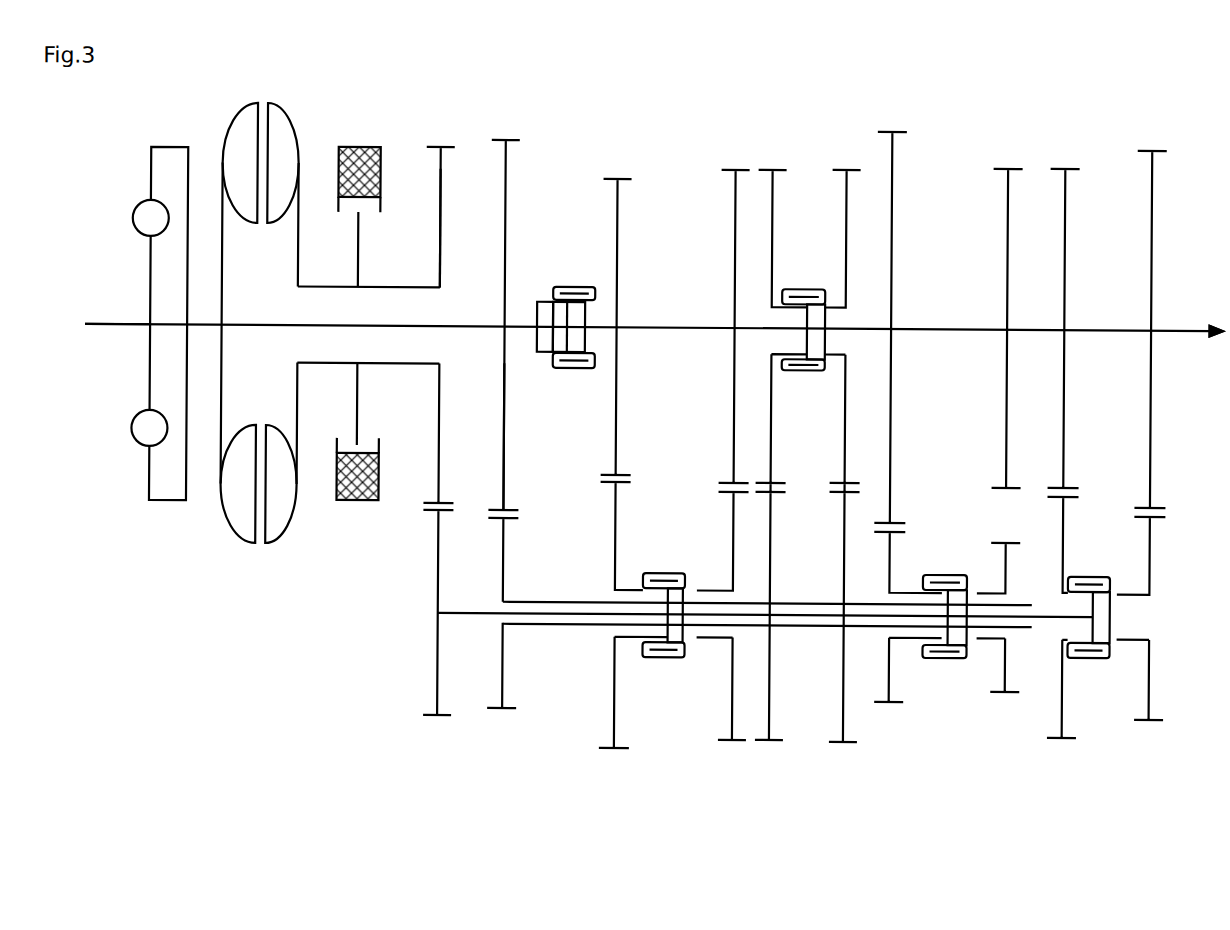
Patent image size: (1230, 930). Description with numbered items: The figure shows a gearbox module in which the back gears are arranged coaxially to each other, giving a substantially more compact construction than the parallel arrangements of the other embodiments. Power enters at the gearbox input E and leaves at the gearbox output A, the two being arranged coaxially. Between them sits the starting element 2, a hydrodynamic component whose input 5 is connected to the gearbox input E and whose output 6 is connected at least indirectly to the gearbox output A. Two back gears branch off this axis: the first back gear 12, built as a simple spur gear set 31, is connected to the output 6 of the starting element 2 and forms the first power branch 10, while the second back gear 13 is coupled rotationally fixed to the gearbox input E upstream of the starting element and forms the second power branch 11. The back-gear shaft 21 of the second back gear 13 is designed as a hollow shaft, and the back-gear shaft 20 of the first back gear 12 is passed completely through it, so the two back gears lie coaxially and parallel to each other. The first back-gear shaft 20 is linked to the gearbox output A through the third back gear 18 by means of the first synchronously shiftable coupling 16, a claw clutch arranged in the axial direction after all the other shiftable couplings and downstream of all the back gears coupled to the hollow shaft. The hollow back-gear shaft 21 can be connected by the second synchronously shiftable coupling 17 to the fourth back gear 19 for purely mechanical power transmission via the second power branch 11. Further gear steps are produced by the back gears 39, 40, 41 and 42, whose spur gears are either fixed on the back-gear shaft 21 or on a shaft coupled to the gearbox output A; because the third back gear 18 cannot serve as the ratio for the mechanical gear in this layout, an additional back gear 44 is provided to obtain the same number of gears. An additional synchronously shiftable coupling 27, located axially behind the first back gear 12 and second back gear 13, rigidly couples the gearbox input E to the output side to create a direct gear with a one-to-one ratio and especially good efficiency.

The starting element 2 is at (288, 102).
The input of the starting element 5 is at (204, 323).
The output of the starting element 6 is at (461, 326).
The first power branch 10 is at (460, 419).
The second power branch 11 is at (518, 449).
The first back gear 12 is at (445, 134).
The second back gear 13 is at (505, 126).
The first synchronously shiftable coupling 16 is at (1095, 673).
The second synchronously shiftable coupling 17 is at (673, 665).
The third back gear 18 is at (1062, 733).
The fourth back gear 19 is at (615, 758).
The back-gear shaft 20 is at (463, 621).
The back-gear shaft 21 is at (545, 625).
The additional synchronously shiftable coupling 27 is at (577, 388).
The spur gear set 31 is at (450, 199).
The back gear 39 is at (770, 751).
The back gear 40 is at (847, 754).
The back gear 41 is at (888, 720).
The back gear 42 is at (1008, 713).
The additional back gear 44 is at (732, 753).
The gearbox input E is at (112, 333).
The gearbox output A is at (1175, 332).